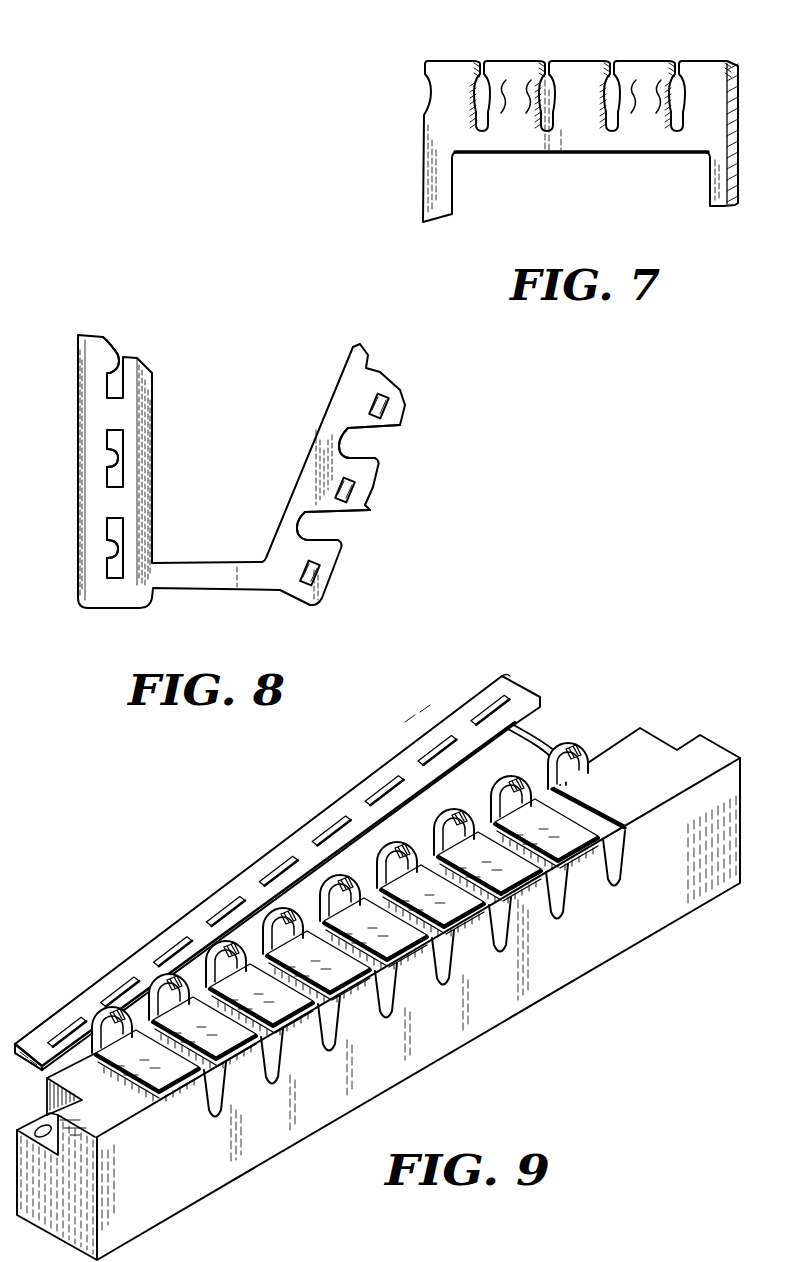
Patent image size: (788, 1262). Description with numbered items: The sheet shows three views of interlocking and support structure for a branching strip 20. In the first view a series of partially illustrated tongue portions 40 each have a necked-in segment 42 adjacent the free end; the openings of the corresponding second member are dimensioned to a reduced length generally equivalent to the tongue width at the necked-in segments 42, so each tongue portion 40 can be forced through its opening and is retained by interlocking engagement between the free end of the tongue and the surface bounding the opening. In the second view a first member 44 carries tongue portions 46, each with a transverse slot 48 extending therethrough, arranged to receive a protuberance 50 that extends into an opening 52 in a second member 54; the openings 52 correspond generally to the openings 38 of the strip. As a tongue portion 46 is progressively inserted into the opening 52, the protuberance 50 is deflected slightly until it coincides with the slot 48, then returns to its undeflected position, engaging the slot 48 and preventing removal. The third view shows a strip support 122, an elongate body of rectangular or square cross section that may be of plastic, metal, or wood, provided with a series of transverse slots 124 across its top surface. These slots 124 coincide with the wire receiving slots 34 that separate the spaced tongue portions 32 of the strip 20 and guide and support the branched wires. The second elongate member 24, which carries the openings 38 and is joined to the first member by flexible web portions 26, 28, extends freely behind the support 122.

In FIG. 9, the branching strip 20 is at (556, 720).
In FIG. 9, the second elongate member 24 is at (81, 997).
In FIG. 9, the flexible web portion 26 is at (570, 732).
In FIG. 9, the flexible web portion 28 is at (382, 834).
In FIG. 9, the tongue portion 32 is at (168, 980).
In FIG. 9, the wire receiving slot 34 is at (423, 845).
In FIG. 9, the opening 38 is at (333, 825).
In FIG. 7, the tongue portion 40 is at (521, 62).
In FIG. 7, the necked-in segment 42 is at (579, 109).
In FIG. 8, the first member 44 is at (323, 416).
In FIG. 8, the tongue portion 46 is at (400, 420).
In FIG. 8, the transverse slot 48 is at (345, 497).
In FIG. 8, the protuberance 50 is at (120, 552).
In FIG. 8, the opening 52 is at (110, 358).
In FIG. 8, the second member 54 is at (78, 512).
In FIG. 9, the strip support 122 is at (612, 914).
In FIG. 9, the transverse slot 124 is at (283, 1063).